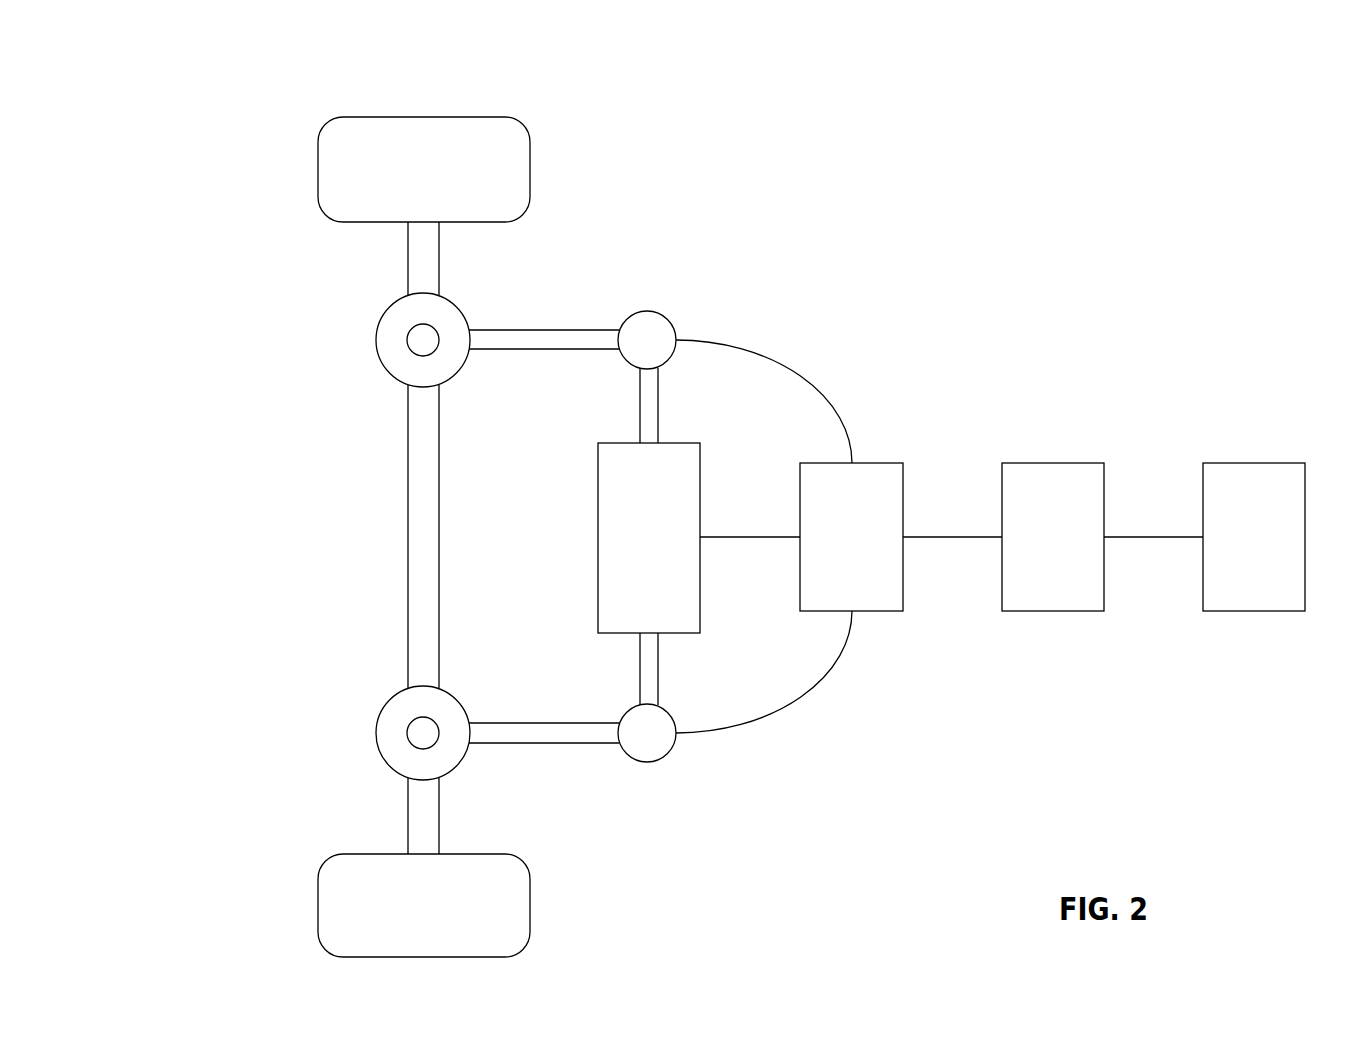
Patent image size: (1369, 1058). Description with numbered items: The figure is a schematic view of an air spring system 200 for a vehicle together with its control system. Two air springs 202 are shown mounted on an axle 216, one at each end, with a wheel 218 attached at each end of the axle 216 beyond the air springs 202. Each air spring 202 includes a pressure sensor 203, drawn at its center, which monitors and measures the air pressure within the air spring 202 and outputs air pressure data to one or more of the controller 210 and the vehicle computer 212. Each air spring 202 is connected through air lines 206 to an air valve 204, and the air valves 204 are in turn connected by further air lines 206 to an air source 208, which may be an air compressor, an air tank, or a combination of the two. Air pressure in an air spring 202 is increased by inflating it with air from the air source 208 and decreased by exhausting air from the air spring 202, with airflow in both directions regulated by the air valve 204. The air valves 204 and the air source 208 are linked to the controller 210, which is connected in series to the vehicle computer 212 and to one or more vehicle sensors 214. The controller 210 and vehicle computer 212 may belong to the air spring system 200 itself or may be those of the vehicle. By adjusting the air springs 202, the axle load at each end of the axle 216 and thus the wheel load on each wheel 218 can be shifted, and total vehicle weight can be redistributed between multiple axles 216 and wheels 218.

The air spring system 200 is at (246, 84).
The air spring 202 is at (452, 318).
The pressure sensor 203 is at (408, 338).
The air valve 204 is at (648, 320).
The air line 206 is at (645, 407).
The air source 208 is at (690, 476).
The controller 210 is at (872, 473).
The vehicle computer 212 is at (1068, 475).
The vehicle sensor 214 is at (1278, 475).
The axle 216 is at (406, 537).
The wheel 218 is at (317, 170).